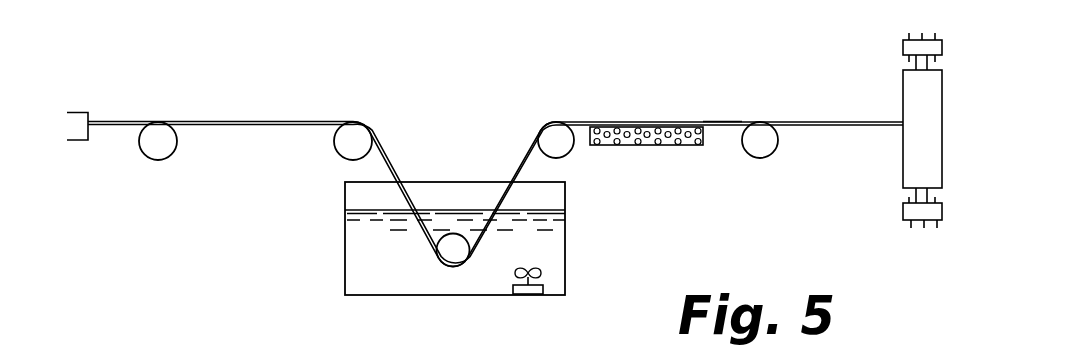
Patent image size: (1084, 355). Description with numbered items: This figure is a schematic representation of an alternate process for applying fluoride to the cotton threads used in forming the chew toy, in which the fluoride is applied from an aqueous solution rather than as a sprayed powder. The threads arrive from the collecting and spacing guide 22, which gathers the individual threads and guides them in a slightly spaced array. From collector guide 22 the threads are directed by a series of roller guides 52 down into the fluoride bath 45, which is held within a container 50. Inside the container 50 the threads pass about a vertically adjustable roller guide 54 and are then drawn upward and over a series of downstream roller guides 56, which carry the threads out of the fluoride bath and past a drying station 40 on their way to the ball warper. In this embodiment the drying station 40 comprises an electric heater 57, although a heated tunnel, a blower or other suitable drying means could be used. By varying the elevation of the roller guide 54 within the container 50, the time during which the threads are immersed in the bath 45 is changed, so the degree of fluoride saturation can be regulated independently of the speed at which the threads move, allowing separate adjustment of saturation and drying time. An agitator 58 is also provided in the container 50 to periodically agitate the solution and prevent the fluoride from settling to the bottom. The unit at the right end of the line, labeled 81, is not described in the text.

The collecting and spacing guide 22 is at (88, 113).
The roller guides 52 is at (160, 145).
The fluoride bath 45 is at (377, 227).
The container 50 is at (567, 262).
The vertically adjustable roller guide 54 is at (450, 255).
The agitator 58 is at (545, 290).
The downstream roller guides 56 is at (558, 148).
The drying station 40 is at (659, 150).
The electric heater 57 is at (703, 140).
The drying/take-up unit 81 is at (918, 92).